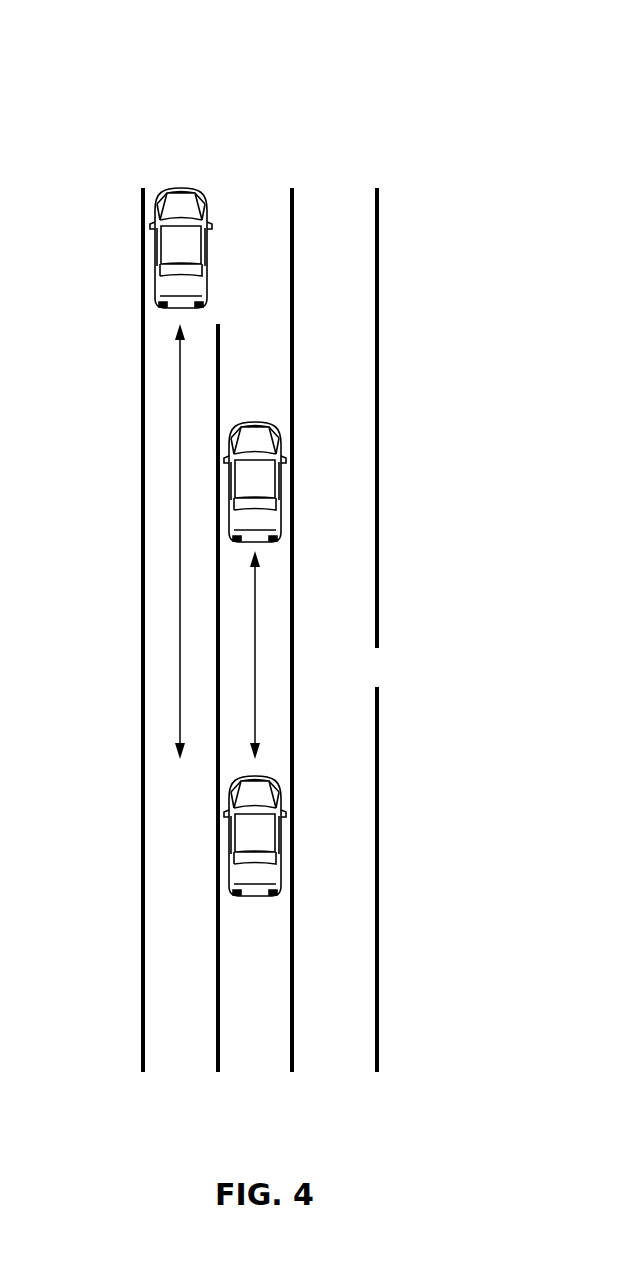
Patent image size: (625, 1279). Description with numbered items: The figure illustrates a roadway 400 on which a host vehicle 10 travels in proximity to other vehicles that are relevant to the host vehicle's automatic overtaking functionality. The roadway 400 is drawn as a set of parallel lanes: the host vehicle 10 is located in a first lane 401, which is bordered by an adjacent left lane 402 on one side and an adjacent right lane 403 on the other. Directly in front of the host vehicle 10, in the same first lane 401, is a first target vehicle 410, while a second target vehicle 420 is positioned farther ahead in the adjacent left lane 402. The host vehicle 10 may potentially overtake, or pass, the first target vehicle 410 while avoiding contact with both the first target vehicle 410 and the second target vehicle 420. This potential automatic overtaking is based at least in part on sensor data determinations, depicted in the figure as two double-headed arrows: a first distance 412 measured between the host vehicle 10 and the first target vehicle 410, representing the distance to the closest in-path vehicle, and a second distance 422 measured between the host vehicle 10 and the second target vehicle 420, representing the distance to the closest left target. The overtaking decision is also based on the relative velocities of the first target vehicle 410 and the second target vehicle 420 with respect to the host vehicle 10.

The roadway 400 is at (130, 49).
The host vehicle 10 is at (282, 850).
The first target vehicle 410 is at (282, 488).
The first distance 412 is at (255, 628).
The second target vehicle 420 is at (181, 189).
The second distance 422 is at (180, 448).
The first lane 401 is at (278, 995).
The adjacent left lane 402 is at (203, 995).
The adjacent right lane 403 is at (357, 995).